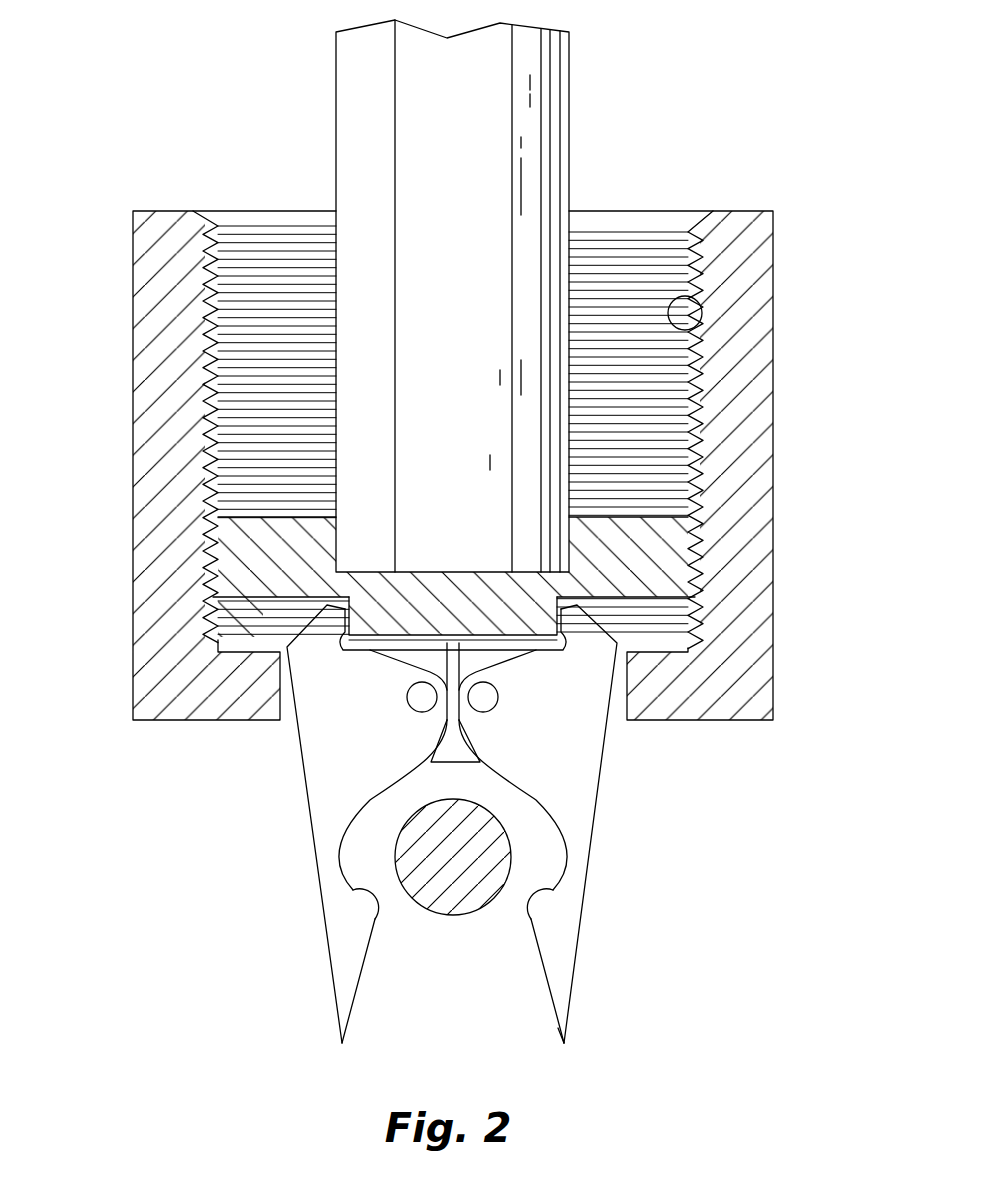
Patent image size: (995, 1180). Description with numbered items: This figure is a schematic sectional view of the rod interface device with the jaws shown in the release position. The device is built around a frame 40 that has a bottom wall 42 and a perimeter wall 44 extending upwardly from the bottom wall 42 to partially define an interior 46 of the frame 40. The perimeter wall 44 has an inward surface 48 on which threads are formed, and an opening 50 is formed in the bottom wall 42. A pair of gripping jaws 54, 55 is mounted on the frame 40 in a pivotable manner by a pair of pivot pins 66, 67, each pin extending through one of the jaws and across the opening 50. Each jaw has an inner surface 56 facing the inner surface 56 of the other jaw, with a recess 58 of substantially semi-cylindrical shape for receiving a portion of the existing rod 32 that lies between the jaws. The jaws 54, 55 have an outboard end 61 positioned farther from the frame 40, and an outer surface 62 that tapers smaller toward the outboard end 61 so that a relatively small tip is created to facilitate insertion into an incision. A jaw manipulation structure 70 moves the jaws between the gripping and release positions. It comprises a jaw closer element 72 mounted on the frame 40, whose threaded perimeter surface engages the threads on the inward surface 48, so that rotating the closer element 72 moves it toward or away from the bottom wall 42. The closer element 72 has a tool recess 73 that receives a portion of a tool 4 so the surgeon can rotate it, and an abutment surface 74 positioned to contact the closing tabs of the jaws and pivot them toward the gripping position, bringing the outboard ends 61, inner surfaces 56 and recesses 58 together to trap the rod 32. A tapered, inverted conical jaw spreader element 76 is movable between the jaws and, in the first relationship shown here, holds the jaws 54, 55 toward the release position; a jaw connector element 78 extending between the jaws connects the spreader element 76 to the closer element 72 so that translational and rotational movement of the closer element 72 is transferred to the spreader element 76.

The tool 4 is at (520, 119).
The interior 46 is at (610, 265).
The inward surface 48 is at (703, 331).
The perimeter wall 44 is at (735, 481).
The frame 40 is at (745, 598).
The bottom wall 42 is at (665, 703).
The jaw manipulation structure 70 is at (650, 575).
The jaw closer element 72 is at (240, 572).
The tool recess 73 is at (337, 533).
The abutment surface 74 is at (262, 630).
The jaw connector element 78 is at (452, 654).
The pivot pin 66 is at (423, 700).
The pivot pin 67 is at (485, 698).
The opening 50 is at (414, 799).
The jaw spreader element 76 is at (450, 750).
The outer surface 62 is at (600, 799).
The gripping jaw 54 is at (327, 860).
The gripping jaw 55 is at (578, 860).
The recess 58 is at (372, 910).
The existing rod 32 is at (455, 873).
The inner surface 56 is at (353, 1007).
The outboard end 61 is at (557, 1028).